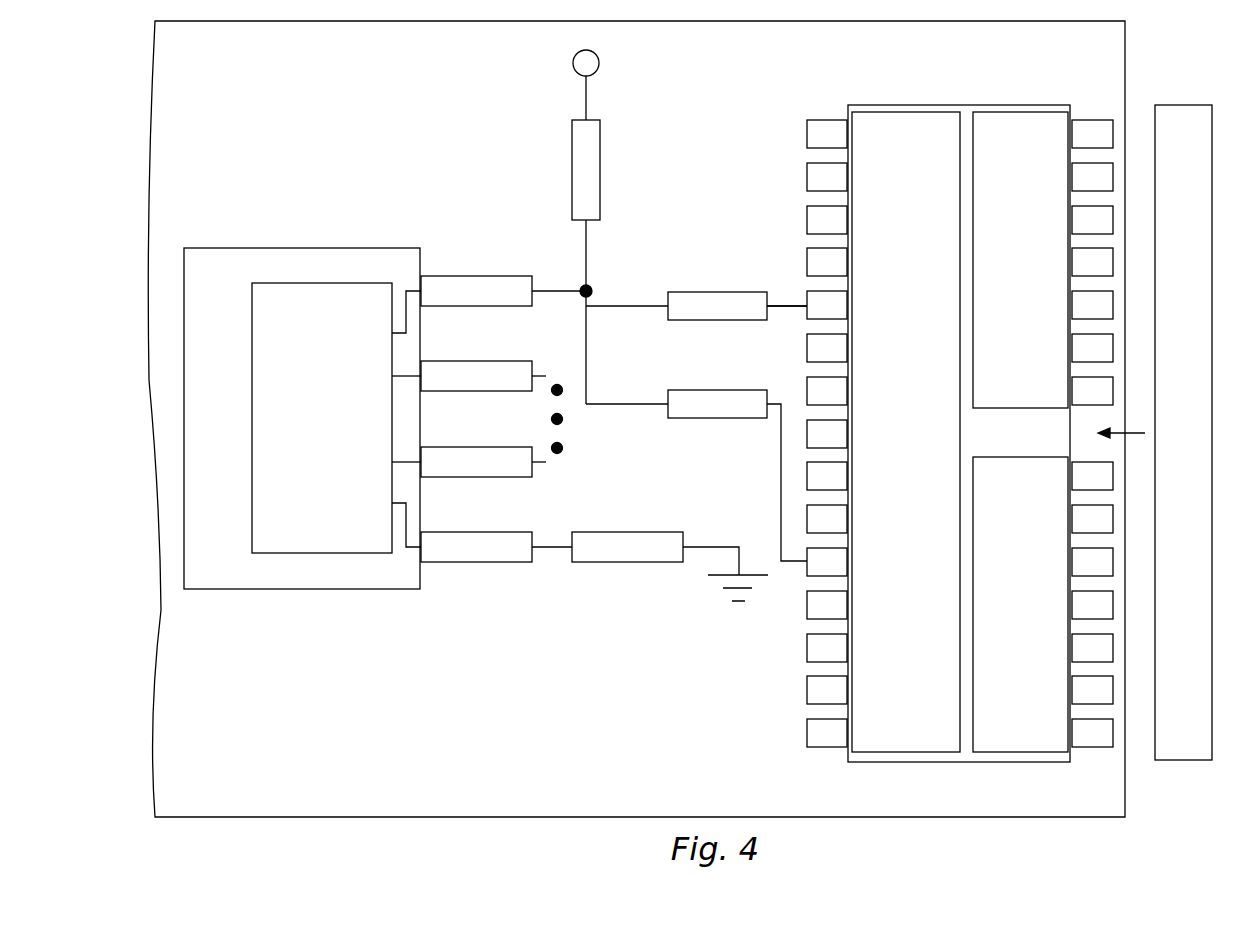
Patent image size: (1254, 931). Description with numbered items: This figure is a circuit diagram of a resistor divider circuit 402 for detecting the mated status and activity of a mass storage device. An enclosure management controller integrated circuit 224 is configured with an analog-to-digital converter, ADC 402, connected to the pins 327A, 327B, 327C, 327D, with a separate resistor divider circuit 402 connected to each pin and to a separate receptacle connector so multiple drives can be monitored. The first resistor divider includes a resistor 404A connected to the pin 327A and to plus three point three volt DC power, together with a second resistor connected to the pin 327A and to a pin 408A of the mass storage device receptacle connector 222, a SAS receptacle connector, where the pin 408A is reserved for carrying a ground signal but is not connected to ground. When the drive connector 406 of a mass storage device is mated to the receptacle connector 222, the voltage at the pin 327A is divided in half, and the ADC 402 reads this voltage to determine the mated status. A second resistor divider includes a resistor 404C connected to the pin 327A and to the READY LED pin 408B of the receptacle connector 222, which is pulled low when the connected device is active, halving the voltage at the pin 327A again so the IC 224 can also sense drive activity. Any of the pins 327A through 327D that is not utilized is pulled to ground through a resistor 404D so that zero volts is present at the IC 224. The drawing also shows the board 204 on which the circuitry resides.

The drive carrier circuit board 204 is at (1125, 48).
The mass storage device receptacle connector 222 is at (968, 112).
The enclosure management controller integrated circuit 224 is at (225, 572).
The pin 327A is at (500, 276).
The pin 327B is at (505, 361).
The pin 327C is at (489, 477).
The pin 327D is at (469, 562).
The resistor divider circuit / ADC 402 is at (322, 553).
The resistor 404A is at (600, 148).
The resistor 404C is at (713, 418).
The resistor 404D is at (618, 562).
The drive connector 406 is at (1180, 745).
The pin 408A is at (808, 292).
The READY LED pin 408B is at (713, 320).